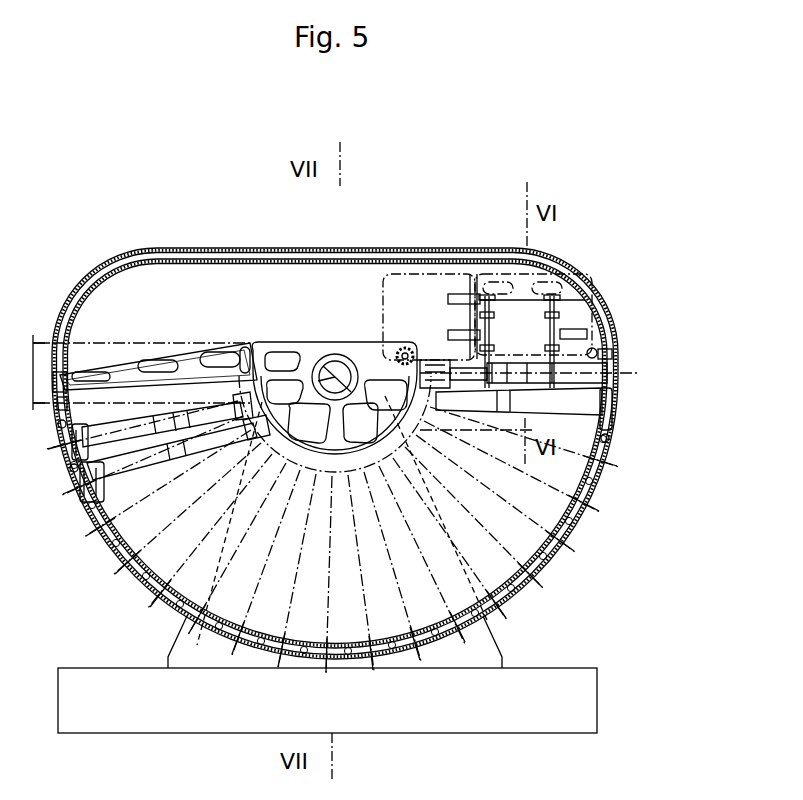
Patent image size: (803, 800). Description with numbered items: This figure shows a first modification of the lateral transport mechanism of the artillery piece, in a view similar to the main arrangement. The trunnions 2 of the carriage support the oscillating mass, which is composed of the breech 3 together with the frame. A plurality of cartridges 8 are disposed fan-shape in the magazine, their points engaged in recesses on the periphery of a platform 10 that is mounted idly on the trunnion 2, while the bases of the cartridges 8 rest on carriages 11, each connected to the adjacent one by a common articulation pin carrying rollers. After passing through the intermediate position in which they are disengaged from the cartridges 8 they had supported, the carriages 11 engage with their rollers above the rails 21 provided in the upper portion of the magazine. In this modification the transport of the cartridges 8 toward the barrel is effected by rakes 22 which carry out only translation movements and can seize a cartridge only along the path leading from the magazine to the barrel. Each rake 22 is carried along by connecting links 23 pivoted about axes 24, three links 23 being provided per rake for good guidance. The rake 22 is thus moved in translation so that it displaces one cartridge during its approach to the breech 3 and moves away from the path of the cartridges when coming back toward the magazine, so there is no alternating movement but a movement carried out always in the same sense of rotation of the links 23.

The trunnions 2 is at (328, 368).
The breech 3 is at (43, 352).
The cartridges 8 is at (127, 478).
The platform 10 is at (297, 462).
The carriages 11 is at (65, 458).
The rails 21 is at (206, 258).
The rakes 22 is at (540, 362).
The connecting links 23 is at (480, 352).
The axes 24 is at (448, 333).